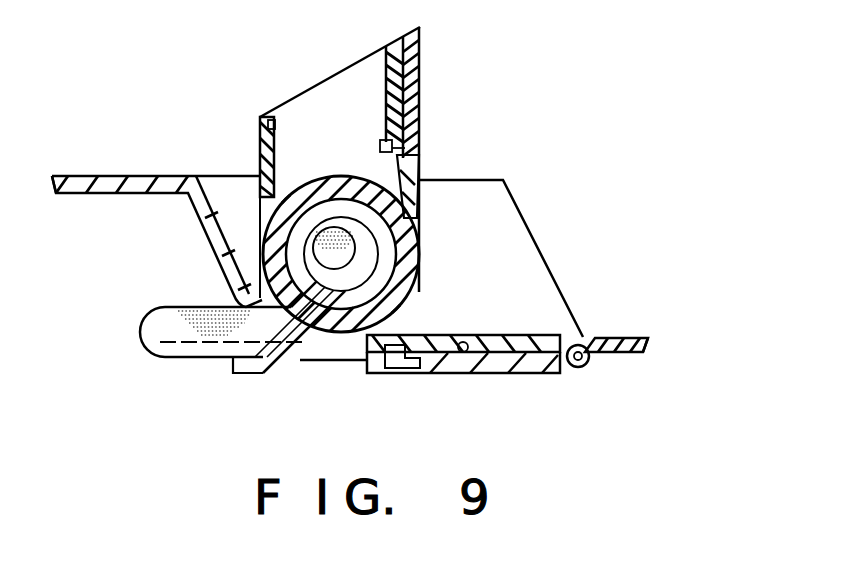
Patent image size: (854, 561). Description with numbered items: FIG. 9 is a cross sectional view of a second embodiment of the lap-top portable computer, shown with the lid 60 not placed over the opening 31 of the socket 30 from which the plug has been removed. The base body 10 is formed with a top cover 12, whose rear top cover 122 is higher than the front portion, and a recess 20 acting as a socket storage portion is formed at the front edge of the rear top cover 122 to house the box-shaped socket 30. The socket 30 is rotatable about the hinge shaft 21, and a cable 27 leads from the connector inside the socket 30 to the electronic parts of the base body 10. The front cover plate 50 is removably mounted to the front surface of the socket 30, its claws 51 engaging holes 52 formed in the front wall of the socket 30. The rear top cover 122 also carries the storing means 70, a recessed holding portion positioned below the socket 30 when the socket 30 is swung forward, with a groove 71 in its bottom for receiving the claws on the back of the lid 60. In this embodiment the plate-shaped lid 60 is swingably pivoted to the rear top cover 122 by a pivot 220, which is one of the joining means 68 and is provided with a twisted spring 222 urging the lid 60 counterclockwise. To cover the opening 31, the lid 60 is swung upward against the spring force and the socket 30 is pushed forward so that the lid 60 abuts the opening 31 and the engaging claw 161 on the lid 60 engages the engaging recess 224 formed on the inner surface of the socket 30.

The base body 10 is at (100, 174).
The rear top cover 122 is at (157, 176).
The socket 30 is at (262, 156).
The engaging recess 224 is at (277, 120).
The opening 31 is at (340, 84).
The front cover plate 50 is at (421, 98).
The claw 51 is at (382, 146).
The hole 52 is at (394, 168).
The recess 20 is at (516, 232).
The hinge shaft 21 is at (306, 250).
The cable 27 is at (215, 353).
The lid 60 is at (501, 335).
The engaging claw 161 is at (394, 374).
The groove 71 is at (418, 370).
The storing means 70 is at (468, 352).
The pivot 220 is at (580, 368).
The top cover 12 is at (639, 338).
The twisted spring 222 is at (616, 356).
The joining means 68 is at (602, 380).